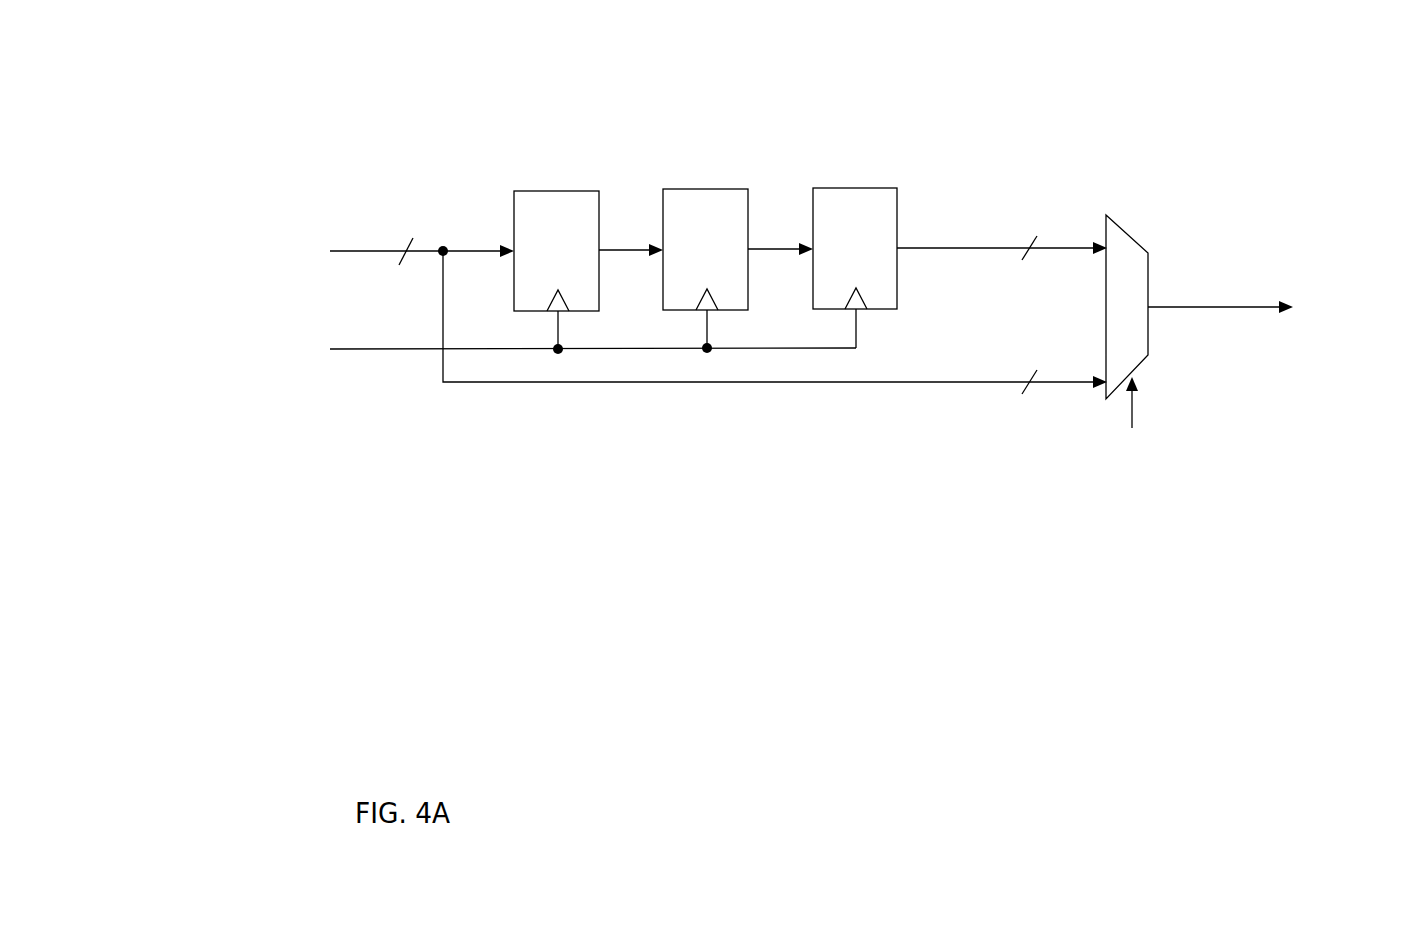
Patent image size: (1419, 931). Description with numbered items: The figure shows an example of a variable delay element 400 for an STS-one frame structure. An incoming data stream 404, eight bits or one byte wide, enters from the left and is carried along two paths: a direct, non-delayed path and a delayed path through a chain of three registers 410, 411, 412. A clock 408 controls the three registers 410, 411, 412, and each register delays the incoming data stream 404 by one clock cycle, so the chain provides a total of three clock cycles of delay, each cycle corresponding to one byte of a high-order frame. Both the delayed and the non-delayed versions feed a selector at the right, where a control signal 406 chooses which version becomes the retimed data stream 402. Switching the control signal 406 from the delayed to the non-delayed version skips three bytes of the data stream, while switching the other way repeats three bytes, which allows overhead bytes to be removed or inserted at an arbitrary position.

The variable delay element 400 is at (478, 93).
The retimed data stream 402 is at (1247, 308).
The incoming data stream 404 is at (370, 252).
The control signal 406 is at (1133, 409).
The clock 408 is at (383, 350).
The register 410 is at (548, 190).
The register 411 is at (701, 188).
The register 412 is at (851, 187).